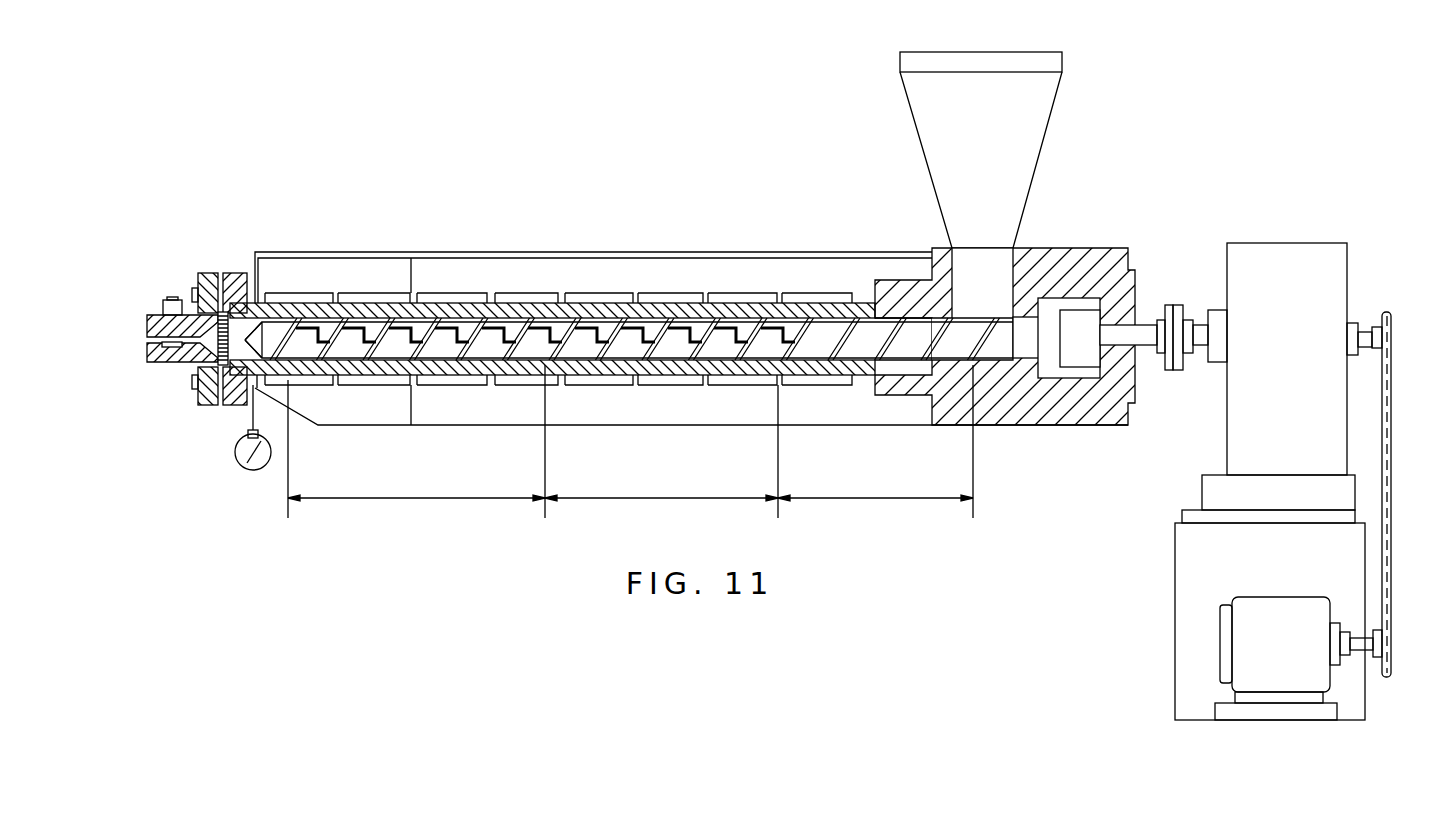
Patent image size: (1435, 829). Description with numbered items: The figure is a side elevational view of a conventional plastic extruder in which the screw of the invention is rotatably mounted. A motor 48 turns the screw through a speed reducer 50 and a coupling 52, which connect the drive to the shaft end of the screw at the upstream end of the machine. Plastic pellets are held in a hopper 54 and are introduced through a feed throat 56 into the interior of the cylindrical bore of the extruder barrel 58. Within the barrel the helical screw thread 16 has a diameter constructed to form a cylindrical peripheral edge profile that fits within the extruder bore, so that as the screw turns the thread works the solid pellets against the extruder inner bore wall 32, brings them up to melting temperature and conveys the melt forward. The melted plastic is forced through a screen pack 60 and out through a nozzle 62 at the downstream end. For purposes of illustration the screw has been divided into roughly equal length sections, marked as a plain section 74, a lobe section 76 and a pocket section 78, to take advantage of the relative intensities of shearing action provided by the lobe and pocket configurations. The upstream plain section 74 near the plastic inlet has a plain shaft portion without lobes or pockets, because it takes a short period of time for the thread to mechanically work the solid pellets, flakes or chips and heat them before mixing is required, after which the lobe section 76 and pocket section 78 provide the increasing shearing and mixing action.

The screw thread 16 is at (620, 322).
The extruder inner bore wall 32 is at (742, 303).
The motor 48 is at (1237, 645).
The speed reducer 50 is at (1307, 250).
The coupling 52 is at (1172, 305).
The hopper 54 is at (1020, 118).
The feed throat 56 is at (1000, 258).
The extruder barrel 58 is at (500, 295).
The screen pack 60 is at (246, 282).
The nozzle 62 is at (145, 337).
The plain section 74 is at (875, 441).
The lobe section 76 is at (661, 451).
The pocket section 78 is at (416, 441).